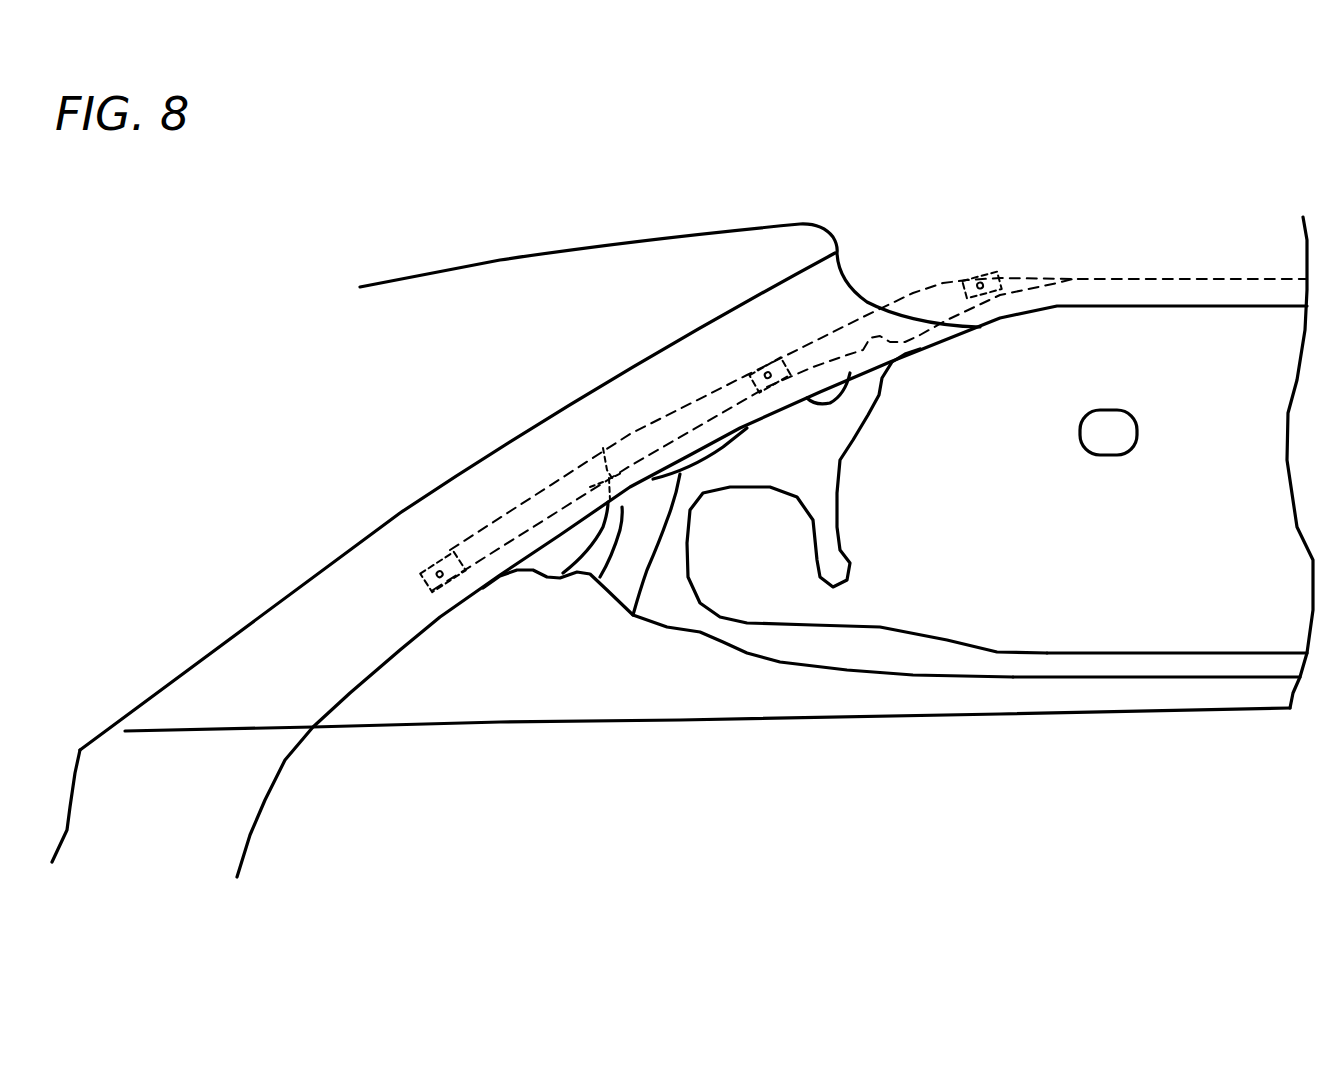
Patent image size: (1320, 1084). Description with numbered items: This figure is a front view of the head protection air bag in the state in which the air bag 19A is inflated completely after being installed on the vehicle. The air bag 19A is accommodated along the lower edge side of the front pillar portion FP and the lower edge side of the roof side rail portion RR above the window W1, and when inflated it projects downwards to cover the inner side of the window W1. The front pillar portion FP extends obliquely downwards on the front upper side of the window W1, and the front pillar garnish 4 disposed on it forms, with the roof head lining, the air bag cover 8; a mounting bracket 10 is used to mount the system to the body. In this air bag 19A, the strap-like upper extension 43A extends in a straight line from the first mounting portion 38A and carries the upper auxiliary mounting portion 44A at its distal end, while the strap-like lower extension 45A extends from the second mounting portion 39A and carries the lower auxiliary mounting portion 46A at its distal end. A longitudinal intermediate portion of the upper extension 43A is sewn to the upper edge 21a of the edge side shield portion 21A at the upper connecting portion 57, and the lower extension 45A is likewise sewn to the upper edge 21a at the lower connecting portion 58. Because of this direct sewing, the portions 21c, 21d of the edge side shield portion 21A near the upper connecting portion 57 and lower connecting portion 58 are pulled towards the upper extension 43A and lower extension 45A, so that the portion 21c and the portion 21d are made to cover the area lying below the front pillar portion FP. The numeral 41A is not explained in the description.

The front pillar garnish 4 is at (300, 610).
The air bag cover 8 is at (430, 620).
The mounting bracket 10 is at (763, 363).
The air bag 19A is at (1142, 687).
The edge side shield portion 21A is at (707, 643).
The upper edge 21a is at (633, 623).
The portion 21c is at (877, 375).
The portion 21d is at (580, 590).
The first mounting portion 38A is at (998, 268).
The second mounting portion 39A is at (750, 368).
The welding point 41A is at (433, 557).
The upper extension 43A is at (942, 283).
The upper auxiliary mounting portion 44A is at (772, 362).
The lower extension 45A is at (660, 428).
The lower auxiliary mounting portion 46A is at (425, 562).
The upper connecting portion 57 is at (850, 373).
The lower connecting portion 58 is at (603, 450).
The front pillar portion FP is at (212, 615).
The roof side rail portion RR is at (1152, 247).
The window W1 is at (848, 707).